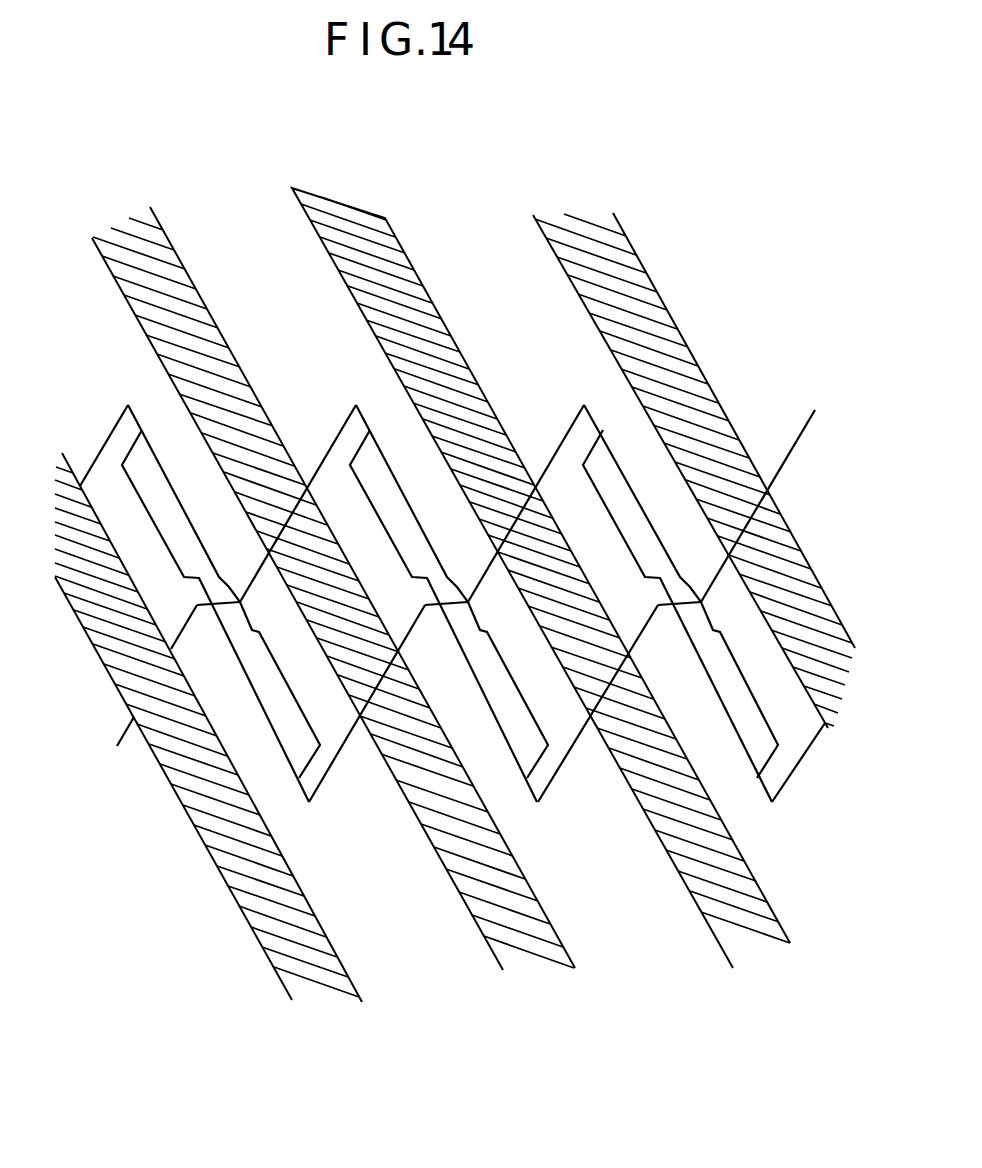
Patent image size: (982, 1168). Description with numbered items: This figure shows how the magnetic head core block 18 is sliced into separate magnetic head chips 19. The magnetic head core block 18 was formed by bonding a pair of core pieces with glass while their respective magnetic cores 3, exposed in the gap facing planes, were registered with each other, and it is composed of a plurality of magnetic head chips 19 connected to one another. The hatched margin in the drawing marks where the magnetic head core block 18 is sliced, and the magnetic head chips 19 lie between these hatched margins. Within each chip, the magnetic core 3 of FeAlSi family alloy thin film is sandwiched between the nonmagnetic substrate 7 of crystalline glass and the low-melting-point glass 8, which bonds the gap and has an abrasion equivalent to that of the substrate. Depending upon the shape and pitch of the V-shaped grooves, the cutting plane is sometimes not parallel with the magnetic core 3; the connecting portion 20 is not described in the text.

The magnetic core 3 is at (160, 477).
The nonmagnetic substrate 7 is at (305, 378).
The low-melting-point glass 8 is at (190, 553).
The magnetic head core block 18 is at (832, 497).
The magnetic head chips 19 is at (244, 232).
The connecting portion 20 is at (229, 590).